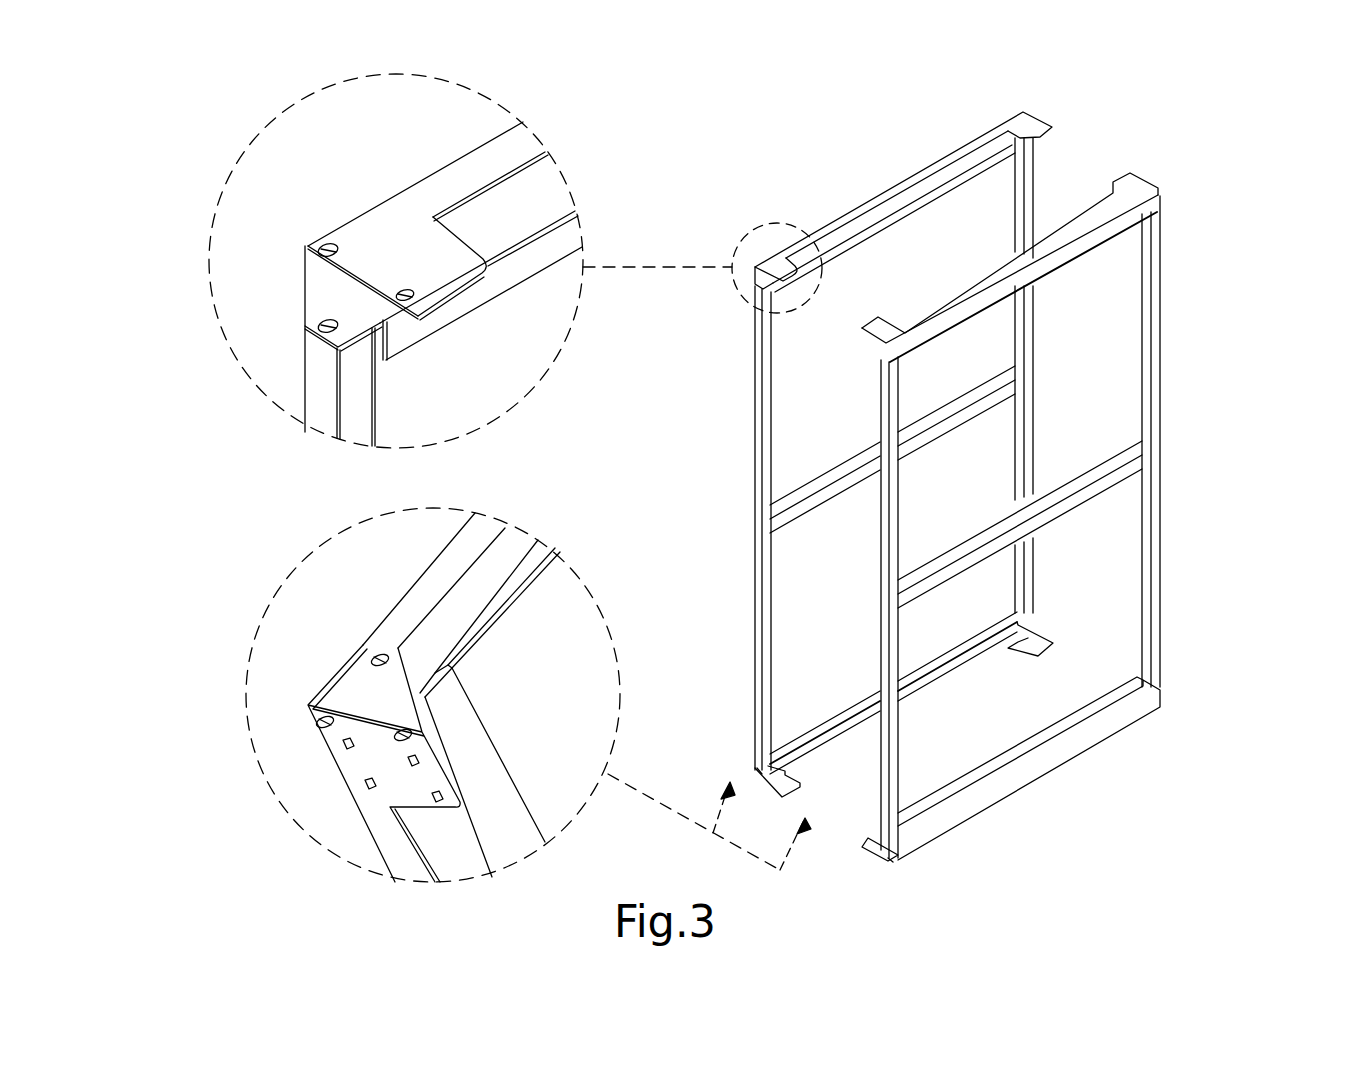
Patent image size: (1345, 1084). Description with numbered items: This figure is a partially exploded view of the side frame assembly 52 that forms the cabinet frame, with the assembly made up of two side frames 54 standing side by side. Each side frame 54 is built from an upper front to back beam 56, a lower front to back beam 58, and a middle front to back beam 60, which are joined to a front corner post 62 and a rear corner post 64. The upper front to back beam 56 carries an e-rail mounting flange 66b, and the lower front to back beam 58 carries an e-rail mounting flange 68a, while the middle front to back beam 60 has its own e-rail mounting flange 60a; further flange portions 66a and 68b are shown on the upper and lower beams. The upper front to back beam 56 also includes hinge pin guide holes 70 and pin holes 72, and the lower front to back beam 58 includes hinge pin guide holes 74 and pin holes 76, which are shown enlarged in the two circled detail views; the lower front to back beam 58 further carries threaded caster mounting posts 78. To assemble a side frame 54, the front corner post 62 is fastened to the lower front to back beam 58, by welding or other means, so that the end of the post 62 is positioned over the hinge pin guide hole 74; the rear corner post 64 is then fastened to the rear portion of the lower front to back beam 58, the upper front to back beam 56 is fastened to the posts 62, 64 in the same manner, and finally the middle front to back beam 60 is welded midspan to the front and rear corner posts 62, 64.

The side frame assembly 52 is at (991, 418).
The side frame 54 is at (1110, 569).
The upper front to back beam 56 is at (968, 140).
The lower front to back beam 58 is at (917, 693).
The middle front to back beam 60 is at (1110, 457).
The e-rail mounting flange 60a is at (845, 468).
The front corner post 62 is at (762, 612).
The rear corner post 64 is at (1155, 527).
The top flange of top rail 66a is at (907, 183).
The e-rail mounting flange 66b is at (850, 237).
The e-rail mounting flange 68a is at (1027, 625).
The bottom rail channel 68b is at (970, 663).
The hinge pin guide holes 70 is at (327, 325).
The pin holes 72 is at (413, 297).
The hinge pin guide hole 74 is at (757, 768).
The pin holes 76 is at (800, 782).
The threaded caster mounting posts 78 is at (345, 743).